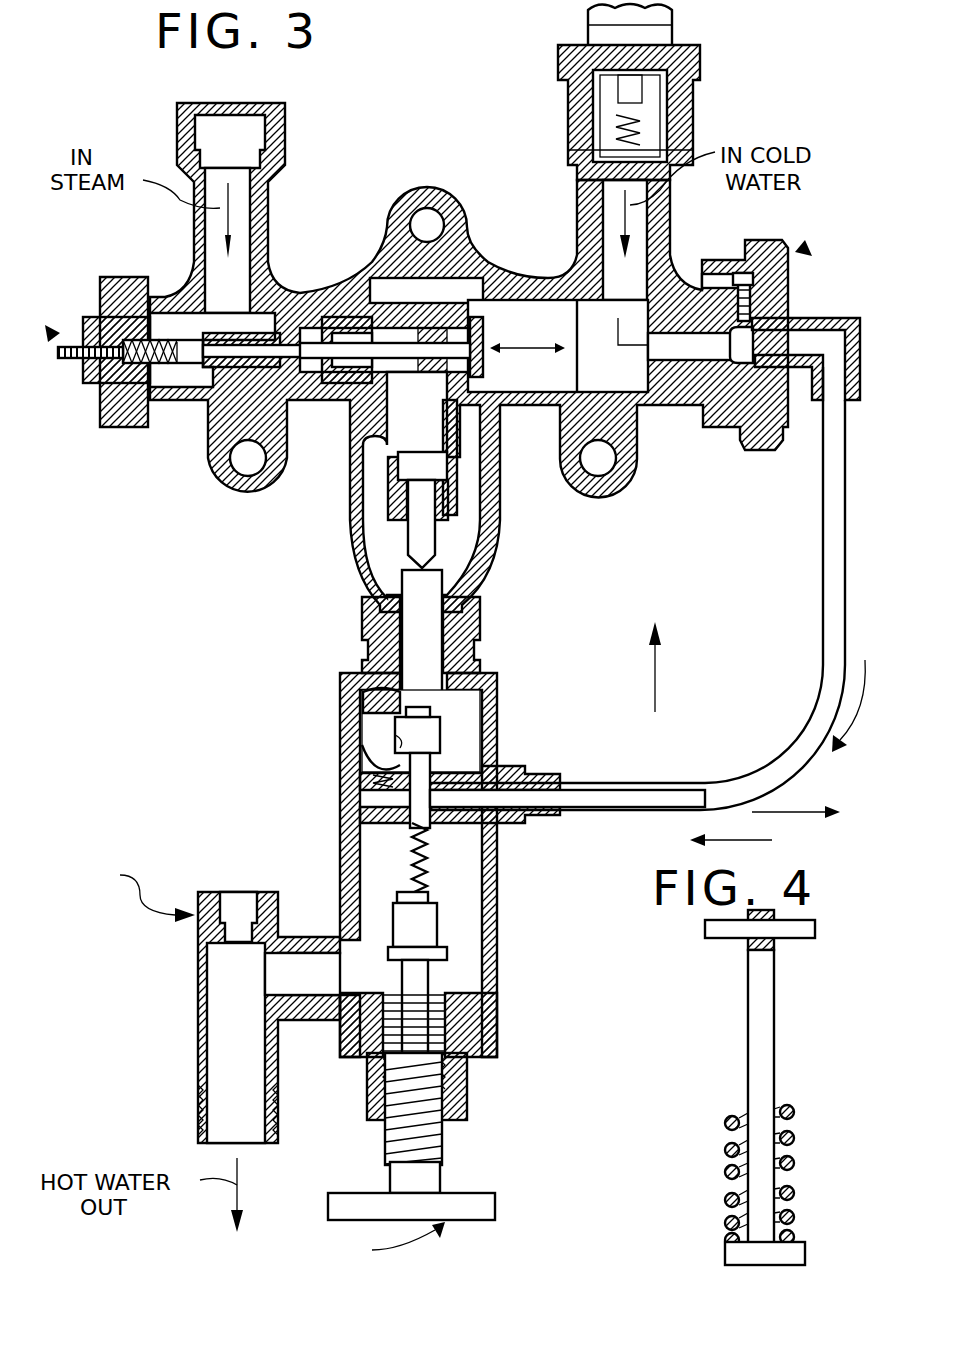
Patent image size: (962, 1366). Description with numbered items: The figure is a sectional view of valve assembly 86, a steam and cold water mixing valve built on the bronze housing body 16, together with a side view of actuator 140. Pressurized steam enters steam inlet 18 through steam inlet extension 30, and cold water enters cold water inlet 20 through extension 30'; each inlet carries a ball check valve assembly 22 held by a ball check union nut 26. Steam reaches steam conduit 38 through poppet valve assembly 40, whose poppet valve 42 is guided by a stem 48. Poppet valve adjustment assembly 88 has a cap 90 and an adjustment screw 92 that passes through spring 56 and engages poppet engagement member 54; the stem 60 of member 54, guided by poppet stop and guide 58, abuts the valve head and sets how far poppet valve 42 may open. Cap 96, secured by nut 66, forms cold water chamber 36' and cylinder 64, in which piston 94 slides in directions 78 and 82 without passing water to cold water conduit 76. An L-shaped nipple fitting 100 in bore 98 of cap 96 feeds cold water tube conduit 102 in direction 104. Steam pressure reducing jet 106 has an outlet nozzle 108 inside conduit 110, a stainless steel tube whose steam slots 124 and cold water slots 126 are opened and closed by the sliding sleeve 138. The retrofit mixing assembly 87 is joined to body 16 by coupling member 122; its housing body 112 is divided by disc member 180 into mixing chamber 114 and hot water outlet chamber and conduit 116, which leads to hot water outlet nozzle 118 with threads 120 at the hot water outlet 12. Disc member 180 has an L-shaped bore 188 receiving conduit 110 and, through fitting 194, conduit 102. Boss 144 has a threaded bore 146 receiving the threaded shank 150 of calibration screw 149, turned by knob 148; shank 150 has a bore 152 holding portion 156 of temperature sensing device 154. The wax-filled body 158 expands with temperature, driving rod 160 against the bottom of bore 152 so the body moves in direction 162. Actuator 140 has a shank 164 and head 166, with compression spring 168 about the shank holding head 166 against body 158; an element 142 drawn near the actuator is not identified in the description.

In FIG. 3, the hot water outlet 12 is at (360, 645).
In FIG. 3, the housing body 16 is at (355, 603).
In FIG. 3, the steam inlet 18 is at (245, 215).
In FIG. 3, the cold water inlet 20 is at (640, 255).
In FIG. 3, the ball check valve assembly 22 is at (670, 65).
In FIG. 3, the ball check union nut 26 is at (680, 50).
In FIG. 3, the steam inlet extension 30 is at (275, 141).
In FIG. 3, the extension 30' is at (596, 141).
In FIG. 3, the cold water receiving chamber 36' is at (636, 347).
In FIG. 3, the steam conduit 38 is at (483, 378).
In FIG. 3, the poppet valve assembly 40 is at (388, 325).
In FIG. 3, the poppet valve 42 is at (310, 395).
In FIG. 3, the stem 48 is at (463, 300).
In FIG. 3, the poppet engagement member 54 is at (140, 278).
In FIG. 3, the spring 56 is at (120, 370).
In FIG. 3, the poppet stop and guide 58 is at (215, 370).
In FIG. 3, the stem 60 is at (243, 350).
In FIG. 3, the cylinder 64 is at (557, 303).
In FIG. 3, the nut 66 is at (760, 452).
In FIG. 3, the cold water conduit 76 is at (470, 520).
In FIG. 3, the direction 78 is at (715, 832).
In FIG. 3, the direction 82 is at (795, 815).
In FIG. 3, the valve assembly 86 is at (805, 245).
In FIG. 3, the retrofit water-steam mixing assembly 87 is at (122, 893).
In FIG. 3, the poppet valve adjustment assembly 88 is at (50, 335).
In FIG. 3, the cap 90 is at (100, 300).
In FIG. 3, the adjustment screw 92 is at (75, 360).
In FIG. 3, the piston 94 is at (525, 410).
In FIG. 3, the cap 96 is at (668, 415).
In FIG. 3, the bore 98 is at (790, 312).
In FIG. 3, the L-shaped nipple fitting 100 is at (866, 300).
In FIG. 3, the cold water tube conduit 102 is at (820, 555).
In FIG. 3, the direction 104 is at (870, 735).
In FIG. 3, the steam pressure reducing jet 106 is at (495, 545).
In FIG. 3, the outlet nozzle 108 is at (408, 540).
In FIG. 3, the conduit 110 is at (440, 690).
In FIG. 3, the housing body 112 is at (497, 968).
In FIG. 3, the hot water mixing chamber 114 is at (467, 725).
In FIG. 3, the hot water outlet chamber and conduit 116 is at (480, 1003).
In FIG. 3, the hot water outlet nozzle 118 is at (195, 1035).
In FIG. 3, the threads 120 is at (195, 1115).
In FIG. 3, the coupling member 122 is at (347, 677).
In FIG. 3, the slots 124 is at (400, 705).
In FIG. 3, the slots 126 is at (362, 750).
In FIG. 3, the sleeve 138 is at (408, 730).
In FIG. 3, the actuator 140 is at (410, 795).
In FIG. 4, the actuator 140 is at (776, 1060).
In FIG. 3, the poppet head 142 is at (440, 745).
In FIG. 4, the poppet head 142 is at (803, 940).
In FIG. 3, the boss 144 is at (468, 1100).
In FIG. 3, the threaded bore 146 is at (445, 1135).
In FIG. 3, the knob 148 is at (495, 1207).
In FIG. 3, the calibration screw 149 is at (386, 1244).
In FIG. 3, the threaded shank 150 is at (440, 1165).
In FIG. 3, the bore 152 is at (470, 1045).
In FIG. 3, the temperature sensing device 154 is at (375, 925).
In FIG. 3, the portion 156 is at (403, 977).
In FIG. 3, the body 158 is at (430, 930).
In FIG. 3, the rod 160 is at (368, 1085).
In FIG. 3, the direction 162 is at (655, 677).
In FIG. 4, the shank 164 is at (748, 1048).
In FIG. 3, the head 166 is at (430, 893).
In FIG. 4, the head 166 is at (805, 1255).
In FIG. 3, the compression spring 168 is at (405, 835).
In FIG. 4, the compression spring 168 is at (795, 1160).
In FIG. 3, the disc member 180 is at (373, 785).
In FIG. 3, the L-shaped bore 188 is at (497, 845).
In FIG. 3, the fitting 194 is at (560, 777).